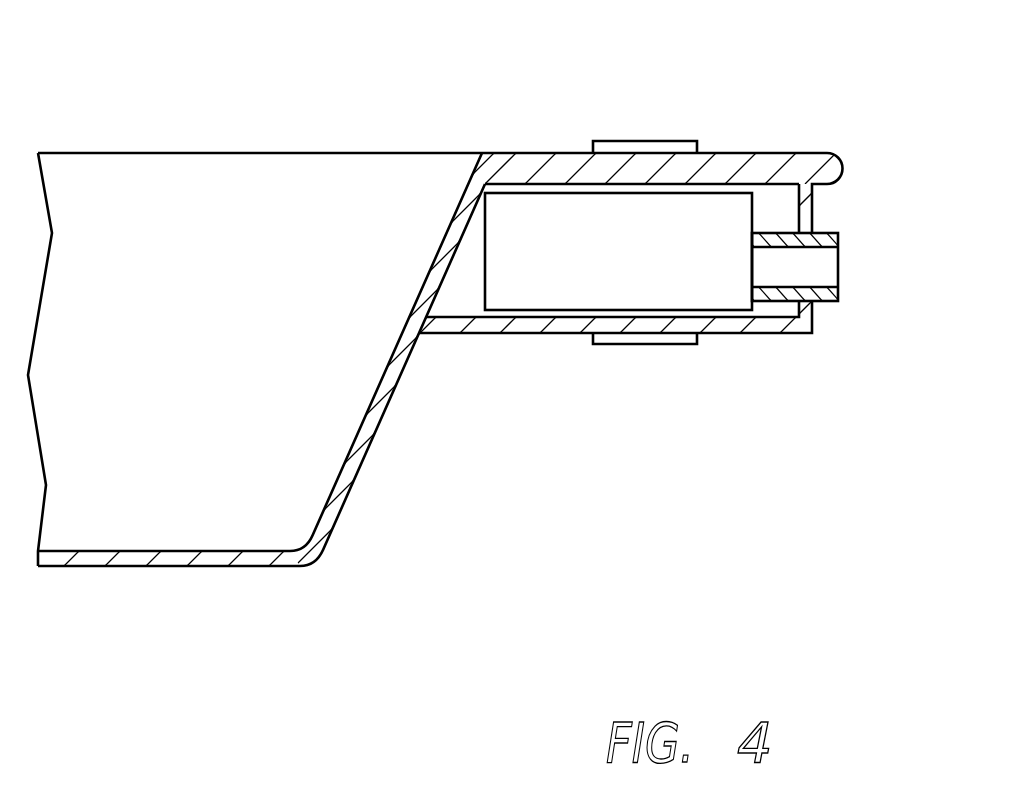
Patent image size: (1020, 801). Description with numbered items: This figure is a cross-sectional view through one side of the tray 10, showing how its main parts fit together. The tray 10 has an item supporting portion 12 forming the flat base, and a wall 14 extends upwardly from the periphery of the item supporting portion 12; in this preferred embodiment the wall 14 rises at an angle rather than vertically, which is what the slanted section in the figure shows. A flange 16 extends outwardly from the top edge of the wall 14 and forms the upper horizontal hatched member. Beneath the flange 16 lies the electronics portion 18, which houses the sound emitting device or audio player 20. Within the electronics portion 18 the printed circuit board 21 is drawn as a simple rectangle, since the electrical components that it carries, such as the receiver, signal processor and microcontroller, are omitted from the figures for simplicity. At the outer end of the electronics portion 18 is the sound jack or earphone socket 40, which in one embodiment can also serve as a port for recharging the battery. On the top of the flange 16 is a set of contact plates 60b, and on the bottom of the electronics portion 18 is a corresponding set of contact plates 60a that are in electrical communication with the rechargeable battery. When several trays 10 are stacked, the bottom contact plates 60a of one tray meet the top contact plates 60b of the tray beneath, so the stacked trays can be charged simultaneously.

The tray 10 is at (848, 121).
The item supporting portion 12 is at (250, 557).
The wall 14 is at (388, 382).
The flange 16 is at (720, 160).
The electronics portion 18 is at (775, 326).
The audio player 20 is at (570, 170).
The printed circuit board 21 is at (647, 256).
The sound jack 40 is at (836, 235).
The contact plates 60a is at (647, 335).
The second set of contact plates 60b is at (647, 141).